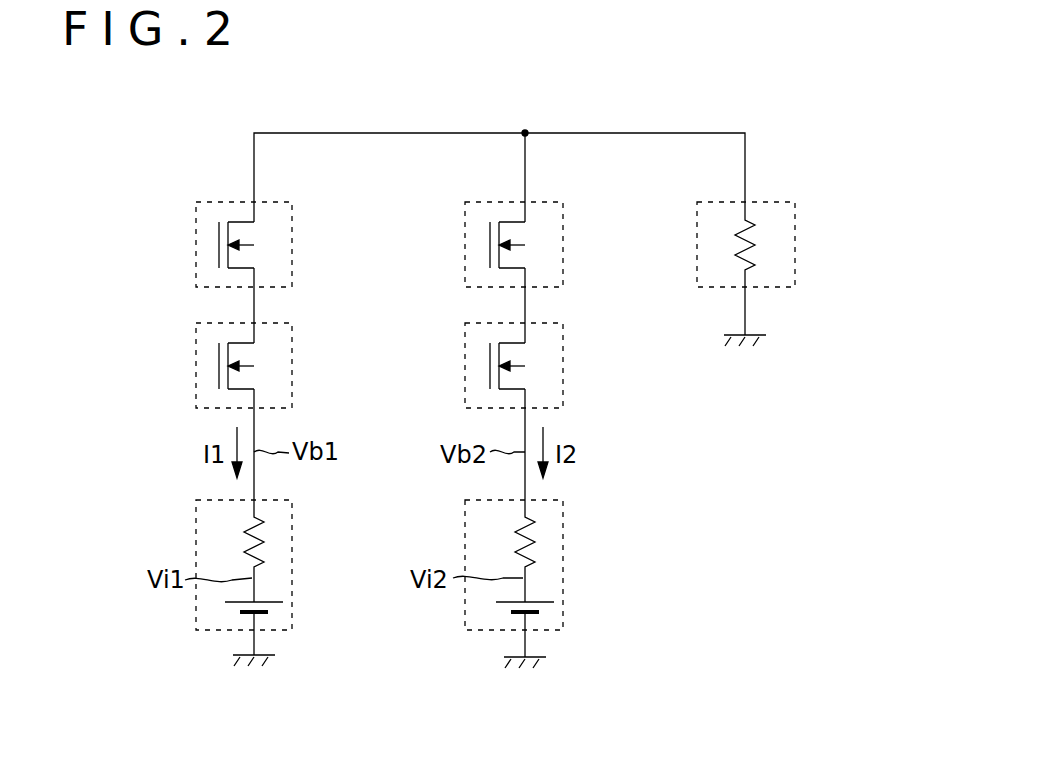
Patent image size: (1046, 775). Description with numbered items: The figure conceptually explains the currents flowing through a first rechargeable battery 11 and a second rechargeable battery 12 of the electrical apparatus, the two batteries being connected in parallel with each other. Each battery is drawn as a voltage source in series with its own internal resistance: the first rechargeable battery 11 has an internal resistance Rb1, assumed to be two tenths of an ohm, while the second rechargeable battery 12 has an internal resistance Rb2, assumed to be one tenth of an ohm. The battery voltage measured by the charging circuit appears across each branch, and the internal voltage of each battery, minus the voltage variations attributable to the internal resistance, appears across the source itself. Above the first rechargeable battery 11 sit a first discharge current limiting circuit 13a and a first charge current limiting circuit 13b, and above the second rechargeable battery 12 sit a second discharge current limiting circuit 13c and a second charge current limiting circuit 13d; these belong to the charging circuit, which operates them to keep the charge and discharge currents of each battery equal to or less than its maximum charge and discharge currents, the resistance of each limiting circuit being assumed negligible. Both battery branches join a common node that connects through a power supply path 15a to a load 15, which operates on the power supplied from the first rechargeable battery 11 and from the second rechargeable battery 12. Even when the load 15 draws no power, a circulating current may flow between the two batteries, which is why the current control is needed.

The first rechargeable battery 11 is at (281, 583).
The second rechargeable battery 12 is at (551, 584).
The first discharge current limiting circuit 13a is at (295, 262).
The first charge current limiting circuit 13b is at (295, 383).
The second discharge current limiting circuit 13c is at (566, 262).
The second charge current limiting circuit 13d is at (566, 383).
The load 15 is at (798, 262).
The power supply path 15a is at (718, 133).
The internal resistance of the first rechargeable battery Rb1 is at (265, 545).
The internal resistance of the second rechargeable battery Rb2 is at (537, 545).